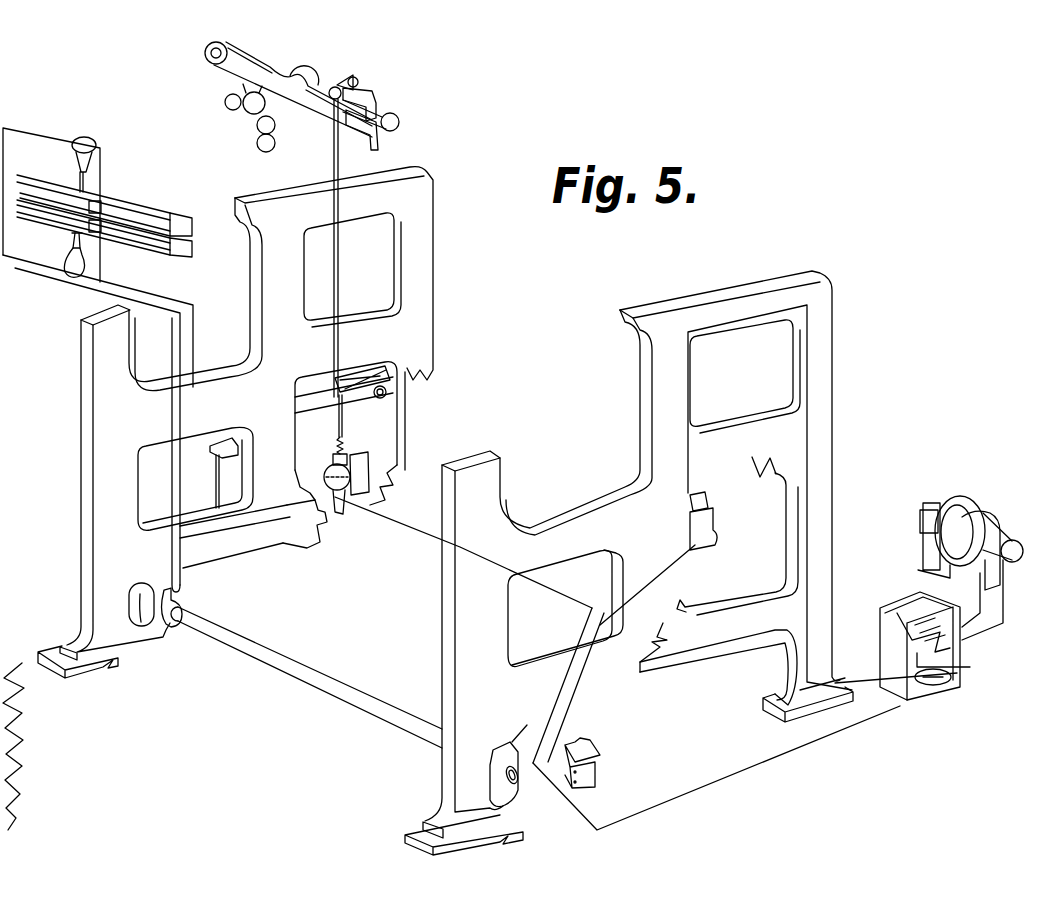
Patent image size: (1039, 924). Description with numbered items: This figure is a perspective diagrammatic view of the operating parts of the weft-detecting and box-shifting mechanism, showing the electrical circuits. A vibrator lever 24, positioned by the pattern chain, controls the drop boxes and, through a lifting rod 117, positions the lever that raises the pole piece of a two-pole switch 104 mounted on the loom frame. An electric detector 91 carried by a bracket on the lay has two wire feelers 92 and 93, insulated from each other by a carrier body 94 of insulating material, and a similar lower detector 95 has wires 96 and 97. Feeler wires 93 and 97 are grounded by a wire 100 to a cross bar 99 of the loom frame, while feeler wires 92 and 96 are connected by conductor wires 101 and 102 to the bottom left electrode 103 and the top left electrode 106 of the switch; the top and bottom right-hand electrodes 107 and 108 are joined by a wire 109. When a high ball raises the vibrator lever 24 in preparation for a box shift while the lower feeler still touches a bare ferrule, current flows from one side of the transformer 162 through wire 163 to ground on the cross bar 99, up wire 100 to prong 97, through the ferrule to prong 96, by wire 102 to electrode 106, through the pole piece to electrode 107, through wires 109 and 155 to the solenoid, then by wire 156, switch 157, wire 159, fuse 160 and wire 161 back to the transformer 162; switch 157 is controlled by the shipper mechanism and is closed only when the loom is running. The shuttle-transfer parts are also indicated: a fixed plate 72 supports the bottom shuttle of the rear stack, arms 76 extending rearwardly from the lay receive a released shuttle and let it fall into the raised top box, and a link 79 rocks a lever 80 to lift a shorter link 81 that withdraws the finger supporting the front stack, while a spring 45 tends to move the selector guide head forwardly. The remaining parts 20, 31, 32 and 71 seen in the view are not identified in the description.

The frame side plate 20 is at (92, 484).
The vibrator lever 24 is at (314, 111).
The upper channel bar 31 is at (140, 222).
The lower channel bar 32 is at (150, 247).
The spring 45 is at (217, 486).
The rod 71 is at (342, 428).
The fixed plate 72 is at (303, 420).
The arms 76 is at (594, 773).
The link 79 is at (378, 121).
The lever 80 is at (368, 86).
The shorter link 81 is at (342, 81).
The electric detector 91 is at (70, 153).
The wire feeler 92 is at (86, 179).
The wire feeler 93 is at (45, 168).
The carrier body 94 is at (88, 139).
The lower detector 95 is at (62, 266).
The wire 96 is at (82, 243).
The wire 97 is at (73, 236).
The cross bar 99 is at (245, 647).
The wire 100 is at (172, 405).
The conductor wire 101 is at (321, 273).
The conductor wire 102 is at (166, 302).
The bottom left electrode 103 is at (338, 512).
The two-pole switch 104 is at (377, 461).
The top left electrode 106 is at (321, 449).
The top right hand electrode 107 is at (347, 454).
The bottom right hand electrode 108 is at (342, 508).
The wire 109 is at (393, 474).
The lifting rod 117 is at (381, 121).
The wire 155 is at (405, 528).
The wire 156 is at (663, 573).
The switch 157 is at (716, 542).
The wire 159 is at (690, 479).
The fuse 160 is at (934, 679).
The wire 161 is at (947, 672).
The transformer 162 is at (912, 613).
The wire 163 is at (716, 768).